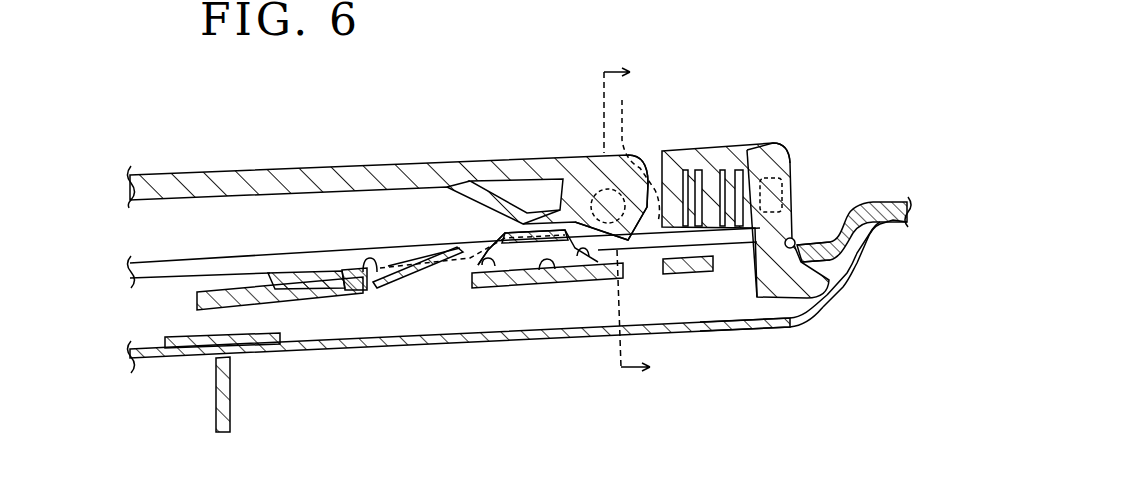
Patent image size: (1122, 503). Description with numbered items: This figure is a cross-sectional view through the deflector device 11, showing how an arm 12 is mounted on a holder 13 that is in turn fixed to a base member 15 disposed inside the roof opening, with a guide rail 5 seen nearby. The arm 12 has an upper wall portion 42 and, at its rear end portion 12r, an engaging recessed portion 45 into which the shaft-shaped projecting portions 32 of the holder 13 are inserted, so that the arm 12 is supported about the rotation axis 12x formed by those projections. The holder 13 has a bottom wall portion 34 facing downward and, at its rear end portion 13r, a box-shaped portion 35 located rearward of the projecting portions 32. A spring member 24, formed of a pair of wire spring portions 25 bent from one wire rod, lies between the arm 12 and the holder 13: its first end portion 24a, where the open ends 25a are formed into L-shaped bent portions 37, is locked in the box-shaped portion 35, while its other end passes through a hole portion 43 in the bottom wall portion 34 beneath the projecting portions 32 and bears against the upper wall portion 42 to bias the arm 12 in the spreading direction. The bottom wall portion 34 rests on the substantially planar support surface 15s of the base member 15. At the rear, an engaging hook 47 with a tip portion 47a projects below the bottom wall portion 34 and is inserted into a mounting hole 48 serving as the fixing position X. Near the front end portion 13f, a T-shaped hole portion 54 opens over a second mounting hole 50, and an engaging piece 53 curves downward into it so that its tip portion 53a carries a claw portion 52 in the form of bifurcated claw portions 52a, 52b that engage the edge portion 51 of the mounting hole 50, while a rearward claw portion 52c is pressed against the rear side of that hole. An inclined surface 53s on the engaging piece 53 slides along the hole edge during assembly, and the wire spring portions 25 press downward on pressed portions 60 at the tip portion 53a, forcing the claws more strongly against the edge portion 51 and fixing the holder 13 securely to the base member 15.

The deflector device 11 is at (182, 88).
The arm 12 is at (270, 175).
The upper wall portion 42 is at (388, 180).
The engaging recessed portion 45 is at (583, 158).
The rear end portion 12r is at (622, 110).
The shaft-shaped projecting portion 32 is at (657, 195).
The rotation axis 12x is at (662, 166).
The box-shaped portion 35 is at (767, 145).
The holder 13 is at (780, 150).
The rear end portion 13r is at (776, 189).
The first end portion 24a is at (787, 168).
The open end 25a is at (862, 167).
The bent portion 37 is at (862, 167).
The base member 15 is at (908, 194).
The mounting hole 48 is at (797, 231).
The spring member 24 is at (158, 260).
The wire spring portion 25 is at (430, 248).
The front end portion 13f is at (270, 284).
The bottom wall portion 34 is at (278, 243).
The hole portion 54 is at (333, 268).
The edge portion 51 is at (364, 262).
The mounting hole 50 is at (478, 240).
The engaging piece 53 is at (357, 266).
The tip portion 53a is at (416, 258).
The pressed portion 60 is at (416, 258).
The inclined surface 53s is at (367, 291).
The support surface 15s is at (547, 270).
The fixing position X is at (547, 292).
The hole portion 43 is at (743, 252).
The claw portion 52 is at (382, 275).
The claw portion 52a is at (416, 258).
The claw portion 52b is at (313, 350).
The claw portion 52c is at (466, 292).
The guide rail 5 is at (524, 326).
The engaging hook 47 is at (770, 300).
The tip portion 47a is at (838, 270).